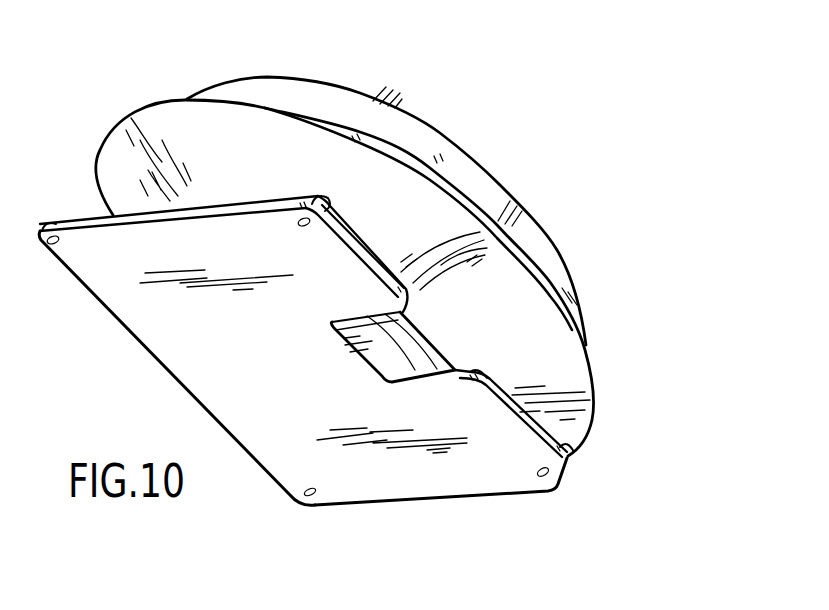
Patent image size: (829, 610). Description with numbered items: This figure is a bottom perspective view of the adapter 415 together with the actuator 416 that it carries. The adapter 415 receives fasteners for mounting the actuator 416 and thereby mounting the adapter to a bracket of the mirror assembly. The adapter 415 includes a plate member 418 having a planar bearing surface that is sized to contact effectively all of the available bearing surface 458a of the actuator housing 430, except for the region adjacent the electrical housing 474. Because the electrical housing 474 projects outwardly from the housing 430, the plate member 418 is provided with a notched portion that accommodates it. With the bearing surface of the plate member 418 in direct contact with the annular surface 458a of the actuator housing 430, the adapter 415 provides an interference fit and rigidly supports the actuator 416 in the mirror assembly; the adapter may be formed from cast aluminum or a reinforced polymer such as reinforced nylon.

The adapter 415 is at (497, 506).
The actuator 416 is at (612, 343).
The plate member 418 is at (569, 452).
The actuator housing 430 is at (503, 252).
The bearing surface 458a is at (414, 325).
The electrical housing 474 is at (398, 352).